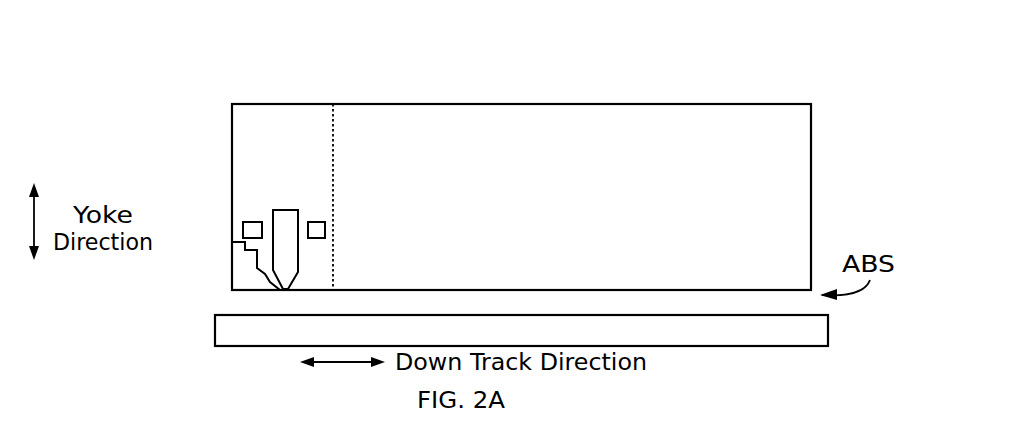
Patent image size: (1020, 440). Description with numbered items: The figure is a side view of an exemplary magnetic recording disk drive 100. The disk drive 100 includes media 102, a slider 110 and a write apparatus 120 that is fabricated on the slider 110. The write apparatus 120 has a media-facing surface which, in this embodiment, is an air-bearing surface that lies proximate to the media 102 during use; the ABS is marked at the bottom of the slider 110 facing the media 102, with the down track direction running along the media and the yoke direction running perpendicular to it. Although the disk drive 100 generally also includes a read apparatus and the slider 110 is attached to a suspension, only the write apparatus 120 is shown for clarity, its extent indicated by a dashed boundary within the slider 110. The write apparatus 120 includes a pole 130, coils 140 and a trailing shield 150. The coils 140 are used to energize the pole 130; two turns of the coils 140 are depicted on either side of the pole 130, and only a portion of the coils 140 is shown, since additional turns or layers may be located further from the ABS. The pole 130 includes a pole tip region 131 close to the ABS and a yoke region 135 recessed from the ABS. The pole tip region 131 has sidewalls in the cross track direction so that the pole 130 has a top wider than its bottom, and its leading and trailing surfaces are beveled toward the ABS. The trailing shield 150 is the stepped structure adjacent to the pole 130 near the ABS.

The disk drive 100 is at (175, 69).
The media 102 is at (215, 345).
The slider 110 is at (811, 168).
The write apparatus 120 is at (336, 158).
The pole 130 is at (283, 210).
The pole tip region 131 is at (310, 288).
The yoke region 135 is at (310, 248).
The coils 140 is at (316, 222).
The trailing shield 150 is at (232, 271).